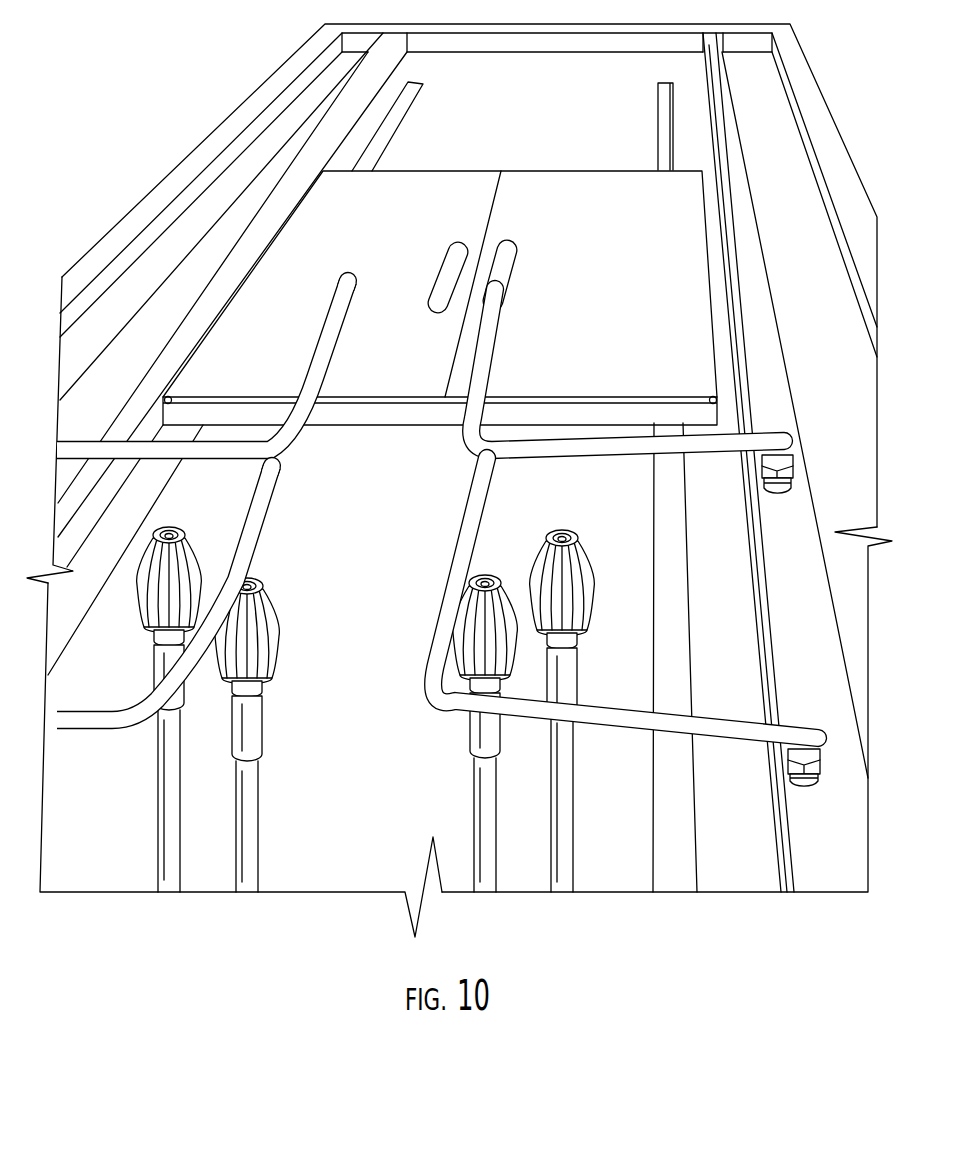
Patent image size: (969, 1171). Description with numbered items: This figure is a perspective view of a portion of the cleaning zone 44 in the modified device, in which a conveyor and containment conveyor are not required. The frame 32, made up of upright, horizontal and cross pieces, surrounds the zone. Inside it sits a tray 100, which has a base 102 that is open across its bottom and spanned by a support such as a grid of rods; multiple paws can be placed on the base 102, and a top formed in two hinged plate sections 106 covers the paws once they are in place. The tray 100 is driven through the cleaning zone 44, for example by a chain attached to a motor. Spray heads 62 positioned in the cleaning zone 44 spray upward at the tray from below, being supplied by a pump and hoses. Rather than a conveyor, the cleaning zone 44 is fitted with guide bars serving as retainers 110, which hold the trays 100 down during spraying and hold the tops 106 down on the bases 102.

The frame 32 is at (257, 87).
The cleaning zone 44 is at (375, 738).
The spray head 62 is at (187, 544).
The tray 100 is at (440, 287).
The base 102 is at (343, 418).
The hinged plate sections 106 is at (362, 190).
The retainers 110 is at (333, 354).